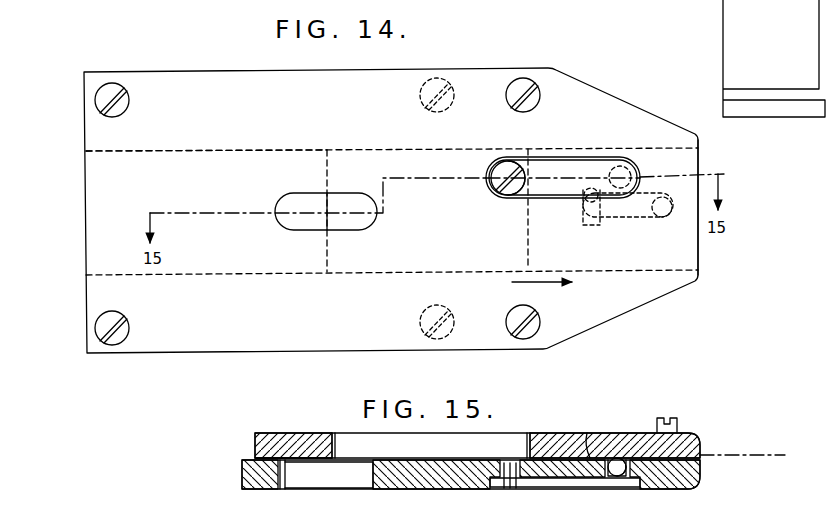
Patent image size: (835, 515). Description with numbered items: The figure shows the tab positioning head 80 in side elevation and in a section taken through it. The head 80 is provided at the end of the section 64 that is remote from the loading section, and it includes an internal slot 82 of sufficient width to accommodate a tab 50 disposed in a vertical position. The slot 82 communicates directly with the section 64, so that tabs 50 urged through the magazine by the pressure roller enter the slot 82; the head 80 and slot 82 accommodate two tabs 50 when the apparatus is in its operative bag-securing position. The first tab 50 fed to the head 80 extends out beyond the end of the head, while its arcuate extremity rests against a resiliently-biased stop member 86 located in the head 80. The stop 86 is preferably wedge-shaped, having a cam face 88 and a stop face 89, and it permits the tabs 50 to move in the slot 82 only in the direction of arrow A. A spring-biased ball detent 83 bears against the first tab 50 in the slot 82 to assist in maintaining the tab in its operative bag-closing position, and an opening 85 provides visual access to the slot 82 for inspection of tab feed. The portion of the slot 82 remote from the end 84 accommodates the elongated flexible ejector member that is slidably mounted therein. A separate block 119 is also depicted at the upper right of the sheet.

In FIG. 14, the tab positioning head 80 is at (148, 68).
In FIG. 15, the tab positioning head 80 is at (232, 437).
In FIG. 14, the internal slot 82 is at (172, 156).
In FIG. 15, the internal slot 82 is at (255, 461).
In FIG. 14, the spring-biased ball detent 83 is at (641, 162).
In FIG. 15, the spring-biased ball detent 83 is at (612, 477).
In FIG. 14, the end 84 is at (700, 165).
In FIG. 15, the end 84 is at (700, 470).
In FIG. 14, the opening 85 is at (303, 229).
In FIG. 15, the opening 85 is at (325, 486).
In FIG. 14, the resiliently-biased stop member 86 is at (593, 222).
In FIG. 15, the resiliently-biased stop member 86 is at (588, 433).
In FIG. 14, the section 64 is at (329, 218).
In FIG. 15, the cam face 88 is at (572, 480).
In FIG. 15, the stop face 89 is at (624, 479).
In FIG. 15, the tab 50 is at (783, 452).
In FIG. 14, the block 119 is at (773, 108).